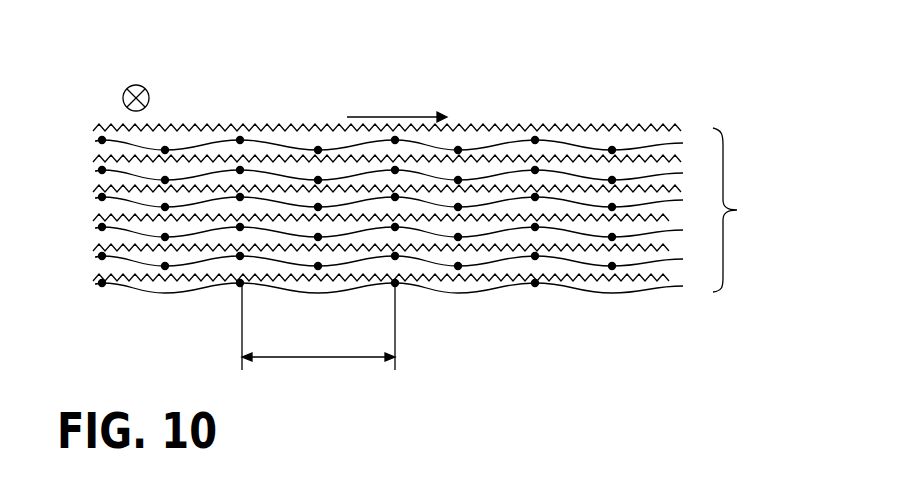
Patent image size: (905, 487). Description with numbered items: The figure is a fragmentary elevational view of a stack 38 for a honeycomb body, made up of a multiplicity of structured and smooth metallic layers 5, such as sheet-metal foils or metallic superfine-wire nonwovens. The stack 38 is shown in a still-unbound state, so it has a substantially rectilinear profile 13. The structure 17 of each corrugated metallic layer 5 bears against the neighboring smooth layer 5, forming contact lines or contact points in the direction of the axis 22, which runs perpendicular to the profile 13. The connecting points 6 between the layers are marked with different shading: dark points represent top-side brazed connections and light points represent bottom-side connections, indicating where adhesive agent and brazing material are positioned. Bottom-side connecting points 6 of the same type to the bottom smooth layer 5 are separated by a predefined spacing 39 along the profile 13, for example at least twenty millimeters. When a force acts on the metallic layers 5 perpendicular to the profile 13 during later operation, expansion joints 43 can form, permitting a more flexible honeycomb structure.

The metallic layer 5 is at (387, 219).
The connecting point 6 is at (100, 197).
The profile 13 is at (395, 117).
The structure 17 is at (286, 127).
The axis 22 is at (128, 88).
The stack 38 is at (405, 219).
The predefined spacing 39 is at (318, 345).
The expansion joint 43 is at (610, 282).